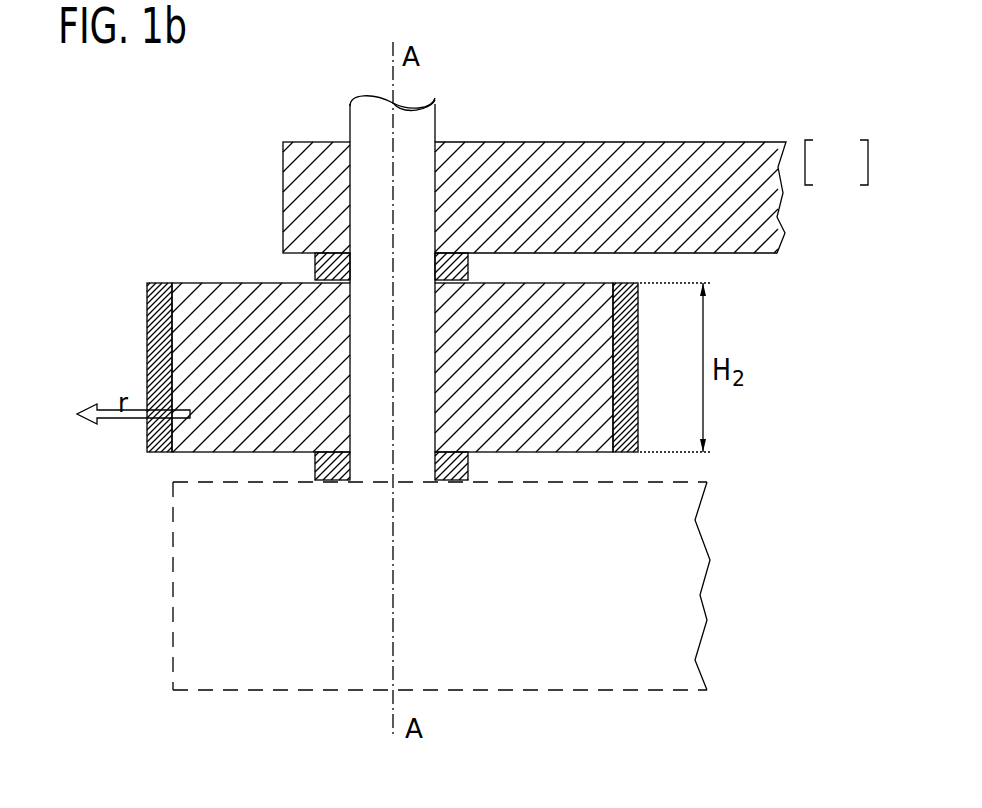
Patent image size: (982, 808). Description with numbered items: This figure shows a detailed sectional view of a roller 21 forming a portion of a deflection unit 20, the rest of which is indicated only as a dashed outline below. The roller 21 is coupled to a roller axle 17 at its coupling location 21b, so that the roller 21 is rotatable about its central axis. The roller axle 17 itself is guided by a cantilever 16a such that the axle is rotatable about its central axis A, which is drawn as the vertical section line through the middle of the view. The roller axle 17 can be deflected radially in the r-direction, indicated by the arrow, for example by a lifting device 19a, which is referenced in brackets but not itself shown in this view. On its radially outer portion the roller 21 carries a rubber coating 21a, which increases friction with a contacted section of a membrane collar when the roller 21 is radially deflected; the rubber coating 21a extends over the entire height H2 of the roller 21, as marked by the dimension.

The roller axle 17 is at (373, 118).
The cantilever 16a is at (645, 160).
The lifting device 19a is at (836, 162).
The roller 21 is at (598, 340).
The rubber coating 21a is at (160, 341).
The coupling location of roller to roller axle 21b is at (348, 343).
The deflection unit 20 is at (670, 619).